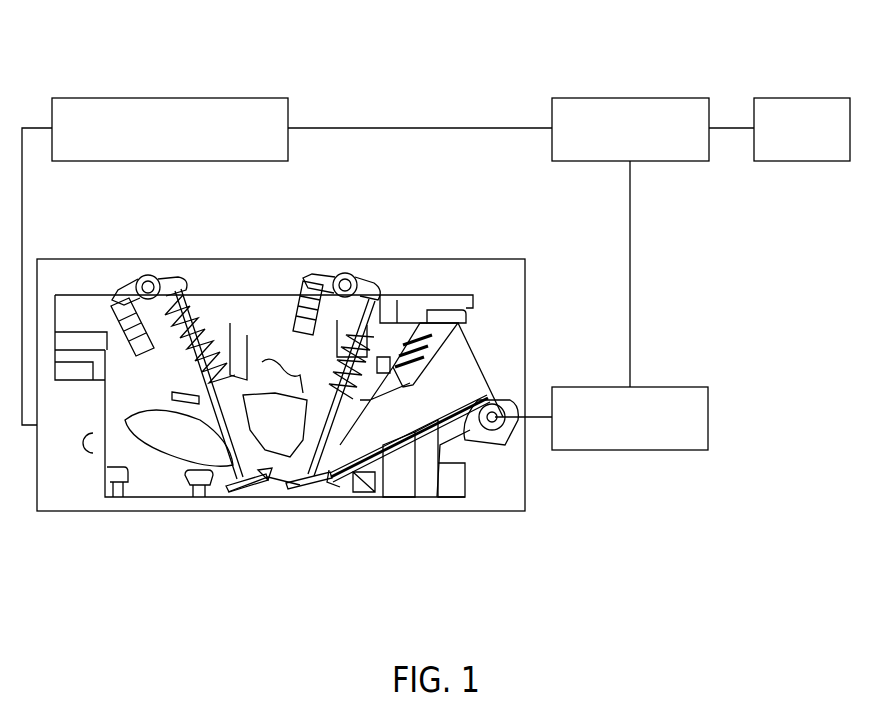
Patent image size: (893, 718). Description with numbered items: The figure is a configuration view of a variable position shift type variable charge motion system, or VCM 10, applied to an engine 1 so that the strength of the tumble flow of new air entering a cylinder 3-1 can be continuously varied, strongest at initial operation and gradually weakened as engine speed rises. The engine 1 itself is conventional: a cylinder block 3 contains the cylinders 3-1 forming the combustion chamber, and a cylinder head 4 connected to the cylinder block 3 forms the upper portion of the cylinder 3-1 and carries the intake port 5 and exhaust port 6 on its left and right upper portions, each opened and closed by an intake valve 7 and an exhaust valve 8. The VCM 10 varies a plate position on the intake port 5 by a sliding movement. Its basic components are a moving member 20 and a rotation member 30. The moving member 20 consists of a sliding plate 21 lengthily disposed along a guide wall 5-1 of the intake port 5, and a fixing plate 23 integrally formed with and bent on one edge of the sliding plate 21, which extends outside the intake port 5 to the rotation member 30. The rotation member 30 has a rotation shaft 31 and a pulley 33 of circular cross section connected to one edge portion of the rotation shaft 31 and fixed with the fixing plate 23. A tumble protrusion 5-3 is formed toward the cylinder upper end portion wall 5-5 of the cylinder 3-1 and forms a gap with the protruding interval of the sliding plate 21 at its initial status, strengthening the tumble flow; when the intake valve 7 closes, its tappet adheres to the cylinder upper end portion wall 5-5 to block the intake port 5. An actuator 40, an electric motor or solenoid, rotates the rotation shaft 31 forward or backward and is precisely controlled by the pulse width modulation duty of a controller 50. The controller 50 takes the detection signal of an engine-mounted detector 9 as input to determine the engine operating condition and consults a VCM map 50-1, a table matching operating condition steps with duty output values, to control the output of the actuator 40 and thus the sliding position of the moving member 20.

The engine 1 is at (291, 258).
The cylinder block 3 is at (147, 488).
The cylinder 3-1 is at (268, 488).
The cylinder head 4 is at (120, 345).
The intake port 5 is at (468, 372).
The guide wall 5-1 is at (360, 488).
The tumble protrusion 5-3 is at (330, 488).
The cylinder upper end portion wall 5-5 is at (340, 487).
The exhaust port 6 is at (135, 428).
The intake valve 7 is at (361, 272).
The exhaust valve 8 is at (190, 330).
The engine-mounted detector 9 is at (140, 98).
The variable charge motion system 10 is at (690, 257).
The moving member 20 is at (429, 516).
The sliding plate 21 is at (423, 435).
The fixing plate 23 is at (470, 437).
The rotation member 30 is at (512, 499).
The rotation shaft 31 is at (512, 442).
The pulley 33 is at (506, 422).
The actuator 40 is at (710, 418).
The controller 50 is at (630, 98).
The VCM map 50-1 is at (800, 98).